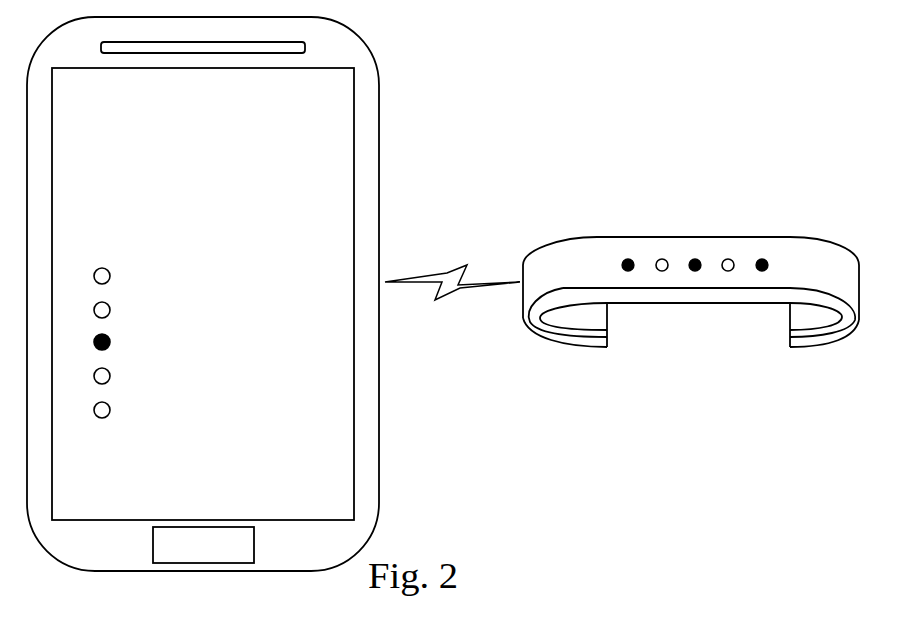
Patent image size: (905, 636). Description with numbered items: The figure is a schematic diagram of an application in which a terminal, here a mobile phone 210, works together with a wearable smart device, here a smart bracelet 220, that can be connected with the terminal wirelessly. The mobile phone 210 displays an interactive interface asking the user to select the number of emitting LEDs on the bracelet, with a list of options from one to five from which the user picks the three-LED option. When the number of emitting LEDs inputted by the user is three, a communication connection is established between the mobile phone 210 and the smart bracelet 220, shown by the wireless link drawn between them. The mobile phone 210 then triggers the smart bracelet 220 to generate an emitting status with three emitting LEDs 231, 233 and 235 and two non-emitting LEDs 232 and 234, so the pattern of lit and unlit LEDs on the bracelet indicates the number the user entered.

The mobile phone 210 is at (380, 130).
The smart bracelet 220 is at (790, 238).
The emitting LED 231 is at (628, 272).
The non-emitting LED 232 is at (661, 259).
The emitting LED 233 is at (695, 272).
The non-emitting LED 234 is at (728, 259).
The emitting LED 235 is at (762, 272).